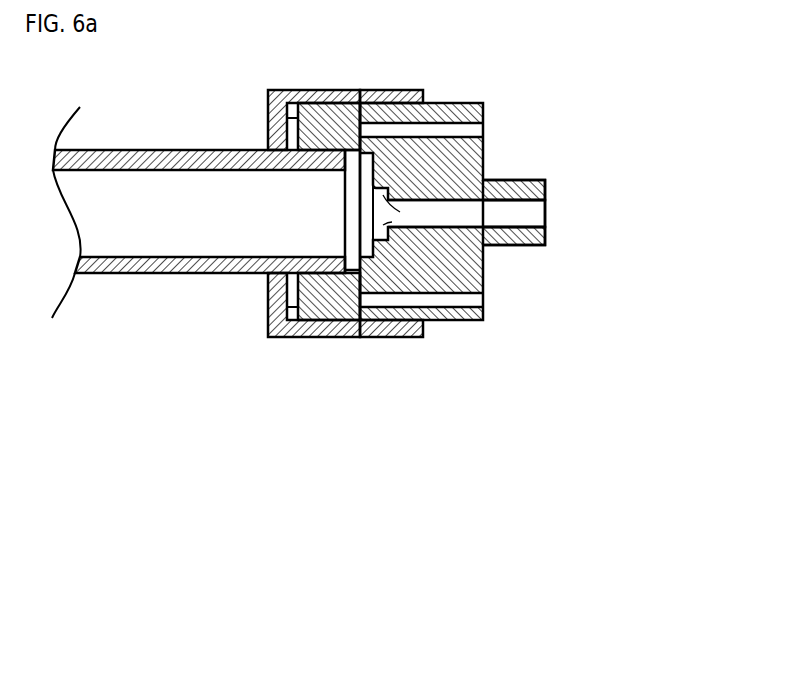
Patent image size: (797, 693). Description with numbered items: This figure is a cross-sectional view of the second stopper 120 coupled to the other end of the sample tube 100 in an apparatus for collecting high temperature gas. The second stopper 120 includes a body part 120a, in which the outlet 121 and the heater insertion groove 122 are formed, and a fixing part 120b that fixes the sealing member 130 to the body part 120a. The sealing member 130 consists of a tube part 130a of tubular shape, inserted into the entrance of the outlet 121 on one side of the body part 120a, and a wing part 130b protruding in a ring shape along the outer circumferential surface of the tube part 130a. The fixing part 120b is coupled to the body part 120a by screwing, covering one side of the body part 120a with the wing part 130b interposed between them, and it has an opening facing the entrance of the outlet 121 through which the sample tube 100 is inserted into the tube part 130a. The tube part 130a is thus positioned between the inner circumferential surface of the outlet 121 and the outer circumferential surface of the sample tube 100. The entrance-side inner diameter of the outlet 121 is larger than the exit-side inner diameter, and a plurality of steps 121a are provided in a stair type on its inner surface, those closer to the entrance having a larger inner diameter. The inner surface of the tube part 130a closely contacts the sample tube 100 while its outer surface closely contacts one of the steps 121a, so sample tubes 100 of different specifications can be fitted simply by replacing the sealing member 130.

The sample tube 100 is at (130, 275).
The second stopper 120 is at (496, 350).
The body part 120a is at (483, 320).
The fixing part 120b is at (441, 296).
The outlet 121 is at (551, 189).
The steps 121a is at (485, 165).
The heater insertion groove 122 is at (485, 300).
The sealing member 130 is at (325, 377).
The tube part 130a is at (333, 337).
The wing part 130b is at (293, 337).